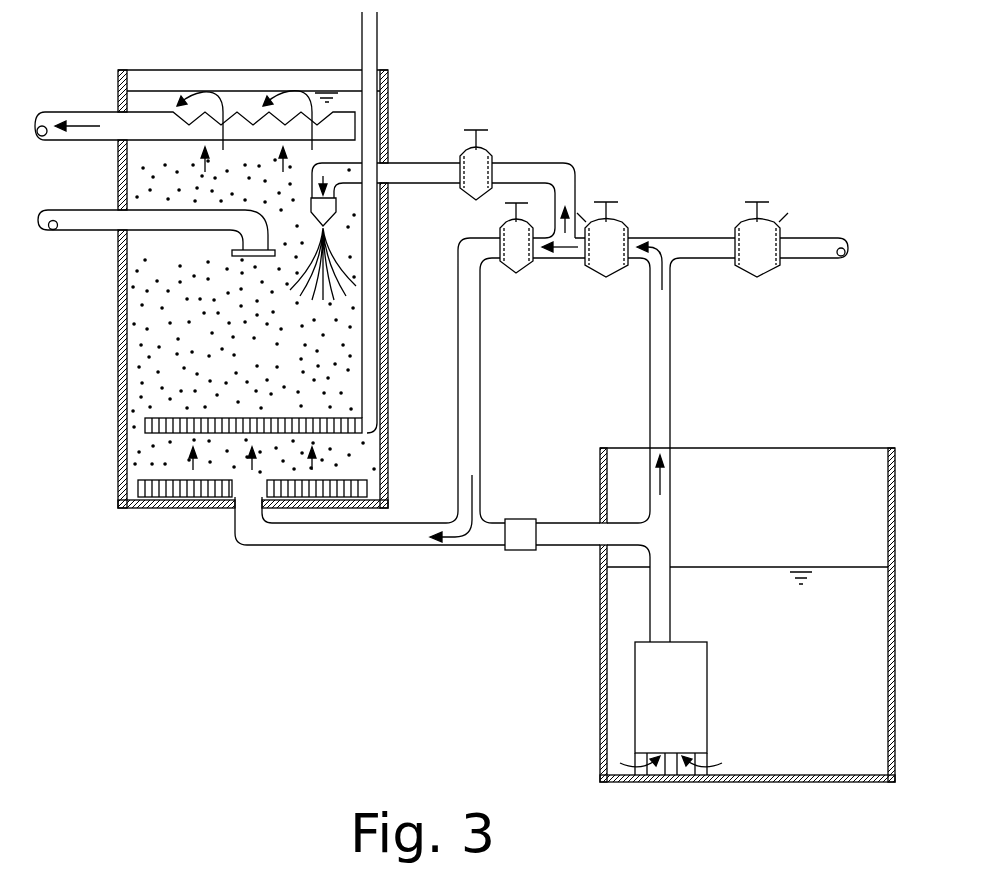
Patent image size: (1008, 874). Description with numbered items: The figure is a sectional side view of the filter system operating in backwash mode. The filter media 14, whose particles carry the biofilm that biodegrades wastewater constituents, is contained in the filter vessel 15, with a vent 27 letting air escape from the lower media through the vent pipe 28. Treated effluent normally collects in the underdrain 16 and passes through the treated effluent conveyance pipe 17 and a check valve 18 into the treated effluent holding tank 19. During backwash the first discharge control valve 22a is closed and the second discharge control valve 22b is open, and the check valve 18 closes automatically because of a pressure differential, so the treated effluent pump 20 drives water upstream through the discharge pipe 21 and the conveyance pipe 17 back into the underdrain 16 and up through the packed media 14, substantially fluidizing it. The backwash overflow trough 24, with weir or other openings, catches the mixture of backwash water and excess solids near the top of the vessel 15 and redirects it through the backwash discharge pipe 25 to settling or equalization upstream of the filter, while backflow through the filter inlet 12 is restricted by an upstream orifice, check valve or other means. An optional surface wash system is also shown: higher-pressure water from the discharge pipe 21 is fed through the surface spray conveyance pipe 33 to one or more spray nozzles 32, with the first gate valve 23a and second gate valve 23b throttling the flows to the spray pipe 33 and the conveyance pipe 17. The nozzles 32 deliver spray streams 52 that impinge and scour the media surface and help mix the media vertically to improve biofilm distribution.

The filter inlet 12 is at (106, 215).
The filter media 14 is at (338, 335).
The filter vessel 15 is at (118, 262).
The underdrain 16 is at (176, 497).
The treated effluent conveyance pipe 17 is at (385, 545).
The check valve 18 is at (512, 550).
The treated effluent holding tank 19 is at (600, 660).
The treated effluent pump 20 is at (700, 690).
The discharge pipe 21 is at (672, 352).
The first discharge control valve 22a is at (765, 224).
The second discharge control valve 22b is at (612, 225).
The first gate valve 23a is at (480, 152).
The second gate valve 23b is at (522, 270).
The backwash overflow trough 24 is at (223, 140).
The backwash discharge pipe 25 is at (83, 115).
The vent 27 is at (145, 421).
The vent pipe 28 is at (377, 32).
The spray nozzle 32 is at (336, 205).
The surface spray conveyance pipe 33 is at (573, 172).
The spray streams 52 is at (333, 236).